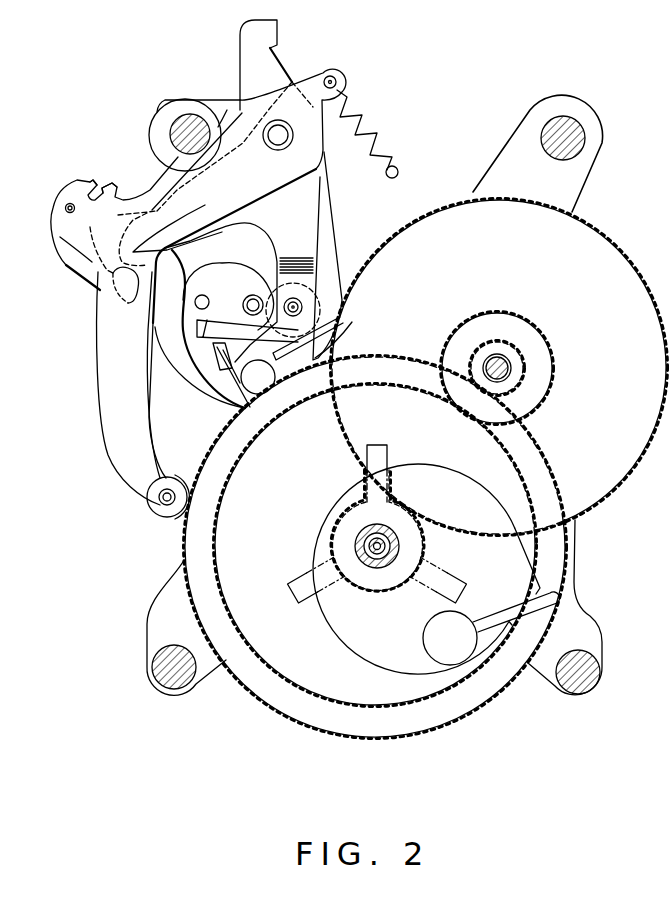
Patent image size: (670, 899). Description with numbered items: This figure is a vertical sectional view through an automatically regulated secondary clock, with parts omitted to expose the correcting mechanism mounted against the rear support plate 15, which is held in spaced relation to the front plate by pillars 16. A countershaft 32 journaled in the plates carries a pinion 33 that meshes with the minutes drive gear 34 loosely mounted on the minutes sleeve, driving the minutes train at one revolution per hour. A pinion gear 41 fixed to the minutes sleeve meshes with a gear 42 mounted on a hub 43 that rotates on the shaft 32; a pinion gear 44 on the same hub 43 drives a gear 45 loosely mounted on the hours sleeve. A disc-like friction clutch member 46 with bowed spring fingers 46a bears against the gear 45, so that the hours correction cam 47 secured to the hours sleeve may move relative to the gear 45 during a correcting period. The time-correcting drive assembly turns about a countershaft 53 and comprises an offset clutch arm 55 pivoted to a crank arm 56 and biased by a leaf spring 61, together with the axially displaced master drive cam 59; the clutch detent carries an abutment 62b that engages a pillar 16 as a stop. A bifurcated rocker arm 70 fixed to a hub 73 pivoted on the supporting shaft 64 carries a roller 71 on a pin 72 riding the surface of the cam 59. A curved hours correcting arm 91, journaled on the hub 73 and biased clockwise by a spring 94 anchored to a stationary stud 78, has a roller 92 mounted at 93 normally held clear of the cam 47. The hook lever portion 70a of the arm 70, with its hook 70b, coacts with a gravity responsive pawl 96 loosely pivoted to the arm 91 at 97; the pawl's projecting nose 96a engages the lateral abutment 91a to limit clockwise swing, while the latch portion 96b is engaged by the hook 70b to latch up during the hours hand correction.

The rear support plate 15 is at (590, 122).
The pillars 16 is at (170, 128).
The countershaft 32 is at (509, 375).
The pinion 33 is at (504, 344).
The minutes drive gear 34 is at (440, 731).
The pinion gear 41 is at (360, 590).
The gear 42 is at (598, 230).
The hub 43 is at (510, 367).
The pinion gear 44 is at (497, 313).
The gear 45 is at (371, 705).
The friction clutch member 46 is at (400, 545).
The bowed spring fingers 46a is at (388, 457).
The hours correction cam 47 is at (376, 662).
The countershaft 53 is at (250, 303).
The offset clutch arm 55 is at (190, 275).
The crank arm 56 is at (245, 363).
The master drive cam 59 is at (188, 380).
The leaf spring 61 is at (318, 342).
The abutment 62b is at (183, 100).
The supporting shaft 64 is at (275, 128).
The bifurcated rocker arm 70 is at (321, 215).
The hook lever portion 70a is at (135, 214).
The hook 70b is at (150, 242).
The roller 71 is at (330, 315).
The pin 72 is at (258, 312).
The hub 73 is at (265, 143).
The stationary stud 78 is at (398, 168).
The hours correcting arm 91 is at (100, 370).
The laterally extending abutment 91a is at (110, 183).
The roller 92 is at (160, 508).
The roller pivot 93 is at (158, 500).
The spring 94 is at (356, 116).
The gravity responsive pawl 96 is at (78, 278).
The projecting nose 96a is at (88, 182).
The latch portion 96b is at (118, 283).
The pawl pivot 97 is at (65, 208).